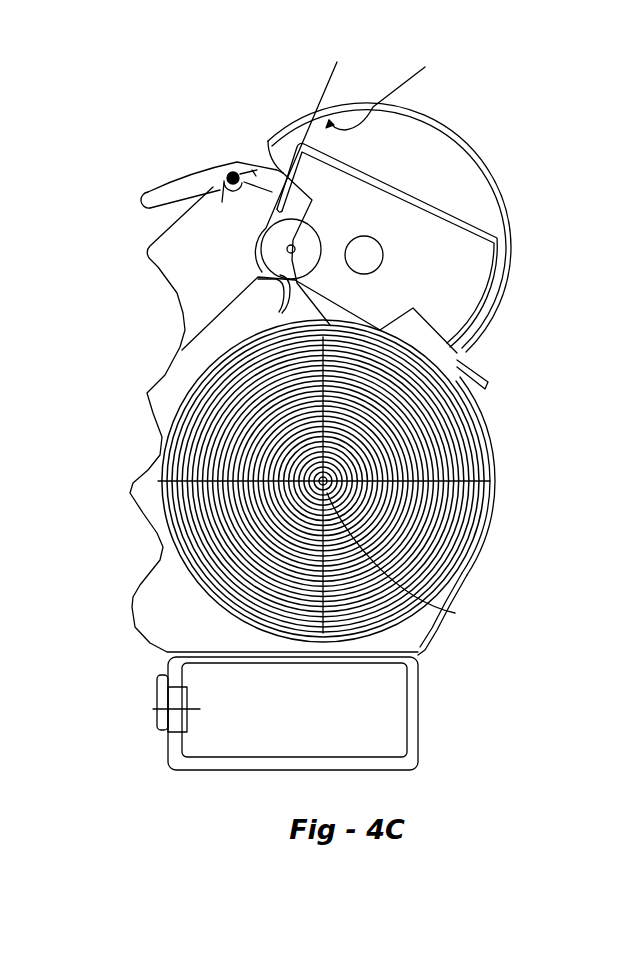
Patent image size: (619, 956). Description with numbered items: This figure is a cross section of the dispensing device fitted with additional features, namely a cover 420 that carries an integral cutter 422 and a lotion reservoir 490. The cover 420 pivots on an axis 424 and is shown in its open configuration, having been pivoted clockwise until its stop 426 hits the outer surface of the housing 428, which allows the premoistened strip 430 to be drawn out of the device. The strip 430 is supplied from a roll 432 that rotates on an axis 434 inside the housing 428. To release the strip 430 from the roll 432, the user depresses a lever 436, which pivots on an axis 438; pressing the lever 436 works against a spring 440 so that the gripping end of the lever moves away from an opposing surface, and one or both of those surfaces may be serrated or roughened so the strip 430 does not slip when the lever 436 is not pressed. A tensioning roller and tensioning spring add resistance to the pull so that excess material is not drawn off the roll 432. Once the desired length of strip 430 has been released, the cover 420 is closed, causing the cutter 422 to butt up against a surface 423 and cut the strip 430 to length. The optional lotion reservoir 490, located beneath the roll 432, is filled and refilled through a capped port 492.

The cover 420 is at (443, 128).
The cutter 422 is at (398, 86).
The surface 423 is at (255, 160).
The axis 424 is at (366, 254).
The stop 426 is at (486, 373).
The housing 428 is at (492, 443).
The premoistened strip 430 is at (328, 80).
The roll 432 is at (448, 557).
The axis 434 is at (455, 613).
The lever 436 is at (157, 190).
The axis 438 is at (232, 168).
The spring 440 is at (247, 163).
The lotion reservoir 490 is at (294, 710).
The capped port 492 is at (158, 700).